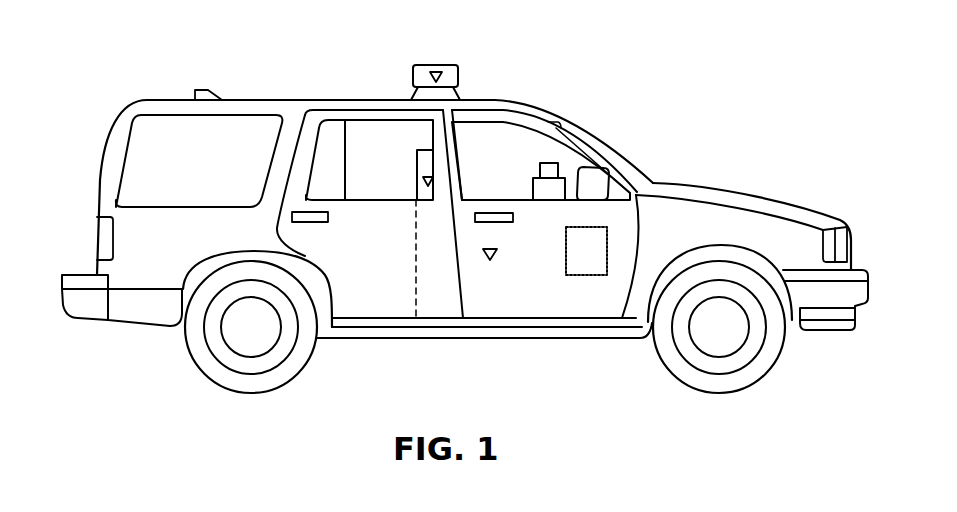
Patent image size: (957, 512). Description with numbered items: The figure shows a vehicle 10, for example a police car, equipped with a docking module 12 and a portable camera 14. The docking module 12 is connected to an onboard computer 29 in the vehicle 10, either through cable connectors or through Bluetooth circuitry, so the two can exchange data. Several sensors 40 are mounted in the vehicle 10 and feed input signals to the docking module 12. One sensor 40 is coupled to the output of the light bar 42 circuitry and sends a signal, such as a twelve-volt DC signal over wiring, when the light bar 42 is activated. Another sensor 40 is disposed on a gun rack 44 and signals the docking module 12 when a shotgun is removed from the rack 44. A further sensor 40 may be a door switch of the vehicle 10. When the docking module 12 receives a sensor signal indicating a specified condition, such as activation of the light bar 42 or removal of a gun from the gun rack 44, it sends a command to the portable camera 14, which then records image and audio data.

The vehicle 10 is at (118, 140).
The docking module 12 is at (565, 187).
The portable camera 14 is at (553, 163).
The onboard computer 29 is at (578, 275).
The sensor 40 is at (413, 78).
The light bar 42 is at (447, 65).
The gun rack 44 is at (415, 157).